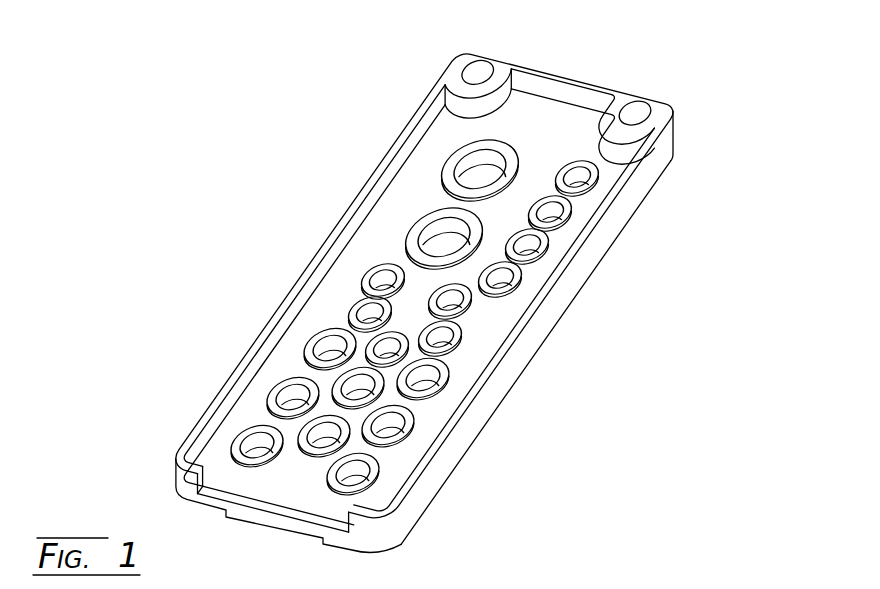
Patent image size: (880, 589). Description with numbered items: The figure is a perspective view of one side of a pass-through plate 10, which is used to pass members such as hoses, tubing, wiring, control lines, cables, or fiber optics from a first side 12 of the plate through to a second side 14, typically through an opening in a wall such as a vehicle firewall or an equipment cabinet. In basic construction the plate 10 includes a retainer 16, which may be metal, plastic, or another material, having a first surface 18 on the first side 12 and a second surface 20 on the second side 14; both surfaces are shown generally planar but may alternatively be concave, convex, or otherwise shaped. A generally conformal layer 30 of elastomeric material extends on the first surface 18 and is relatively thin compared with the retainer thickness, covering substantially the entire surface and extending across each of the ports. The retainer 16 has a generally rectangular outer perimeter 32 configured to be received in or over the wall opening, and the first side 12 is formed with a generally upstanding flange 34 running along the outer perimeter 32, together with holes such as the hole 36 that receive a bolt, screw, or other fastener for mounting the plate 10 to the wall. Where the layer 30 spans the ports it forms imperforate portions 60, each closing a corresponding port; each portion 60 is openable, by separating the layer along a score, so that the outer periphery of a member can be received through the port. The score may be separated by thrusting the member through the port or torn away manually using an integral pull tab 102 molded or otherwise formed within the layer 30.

The pass-through plate 10 is at (679, 65).
The first side 12 is at (329, 187).
The second side 14 is at (501, 406).
The retainer 16 is at (674, 138).
The first surface 18 is at (528, 82).
The second surface 20 is at (532, 360).
The conformal layer 30 is at (398, 155).
The outer perimeter 32 is at (622, 232).
The upstanding flange 34 is at (262, 336).
The hole 36 is at (480, 72).
The imperforate portion 60 is at (330, 345).
The pull tab 102 is at (453, 160).